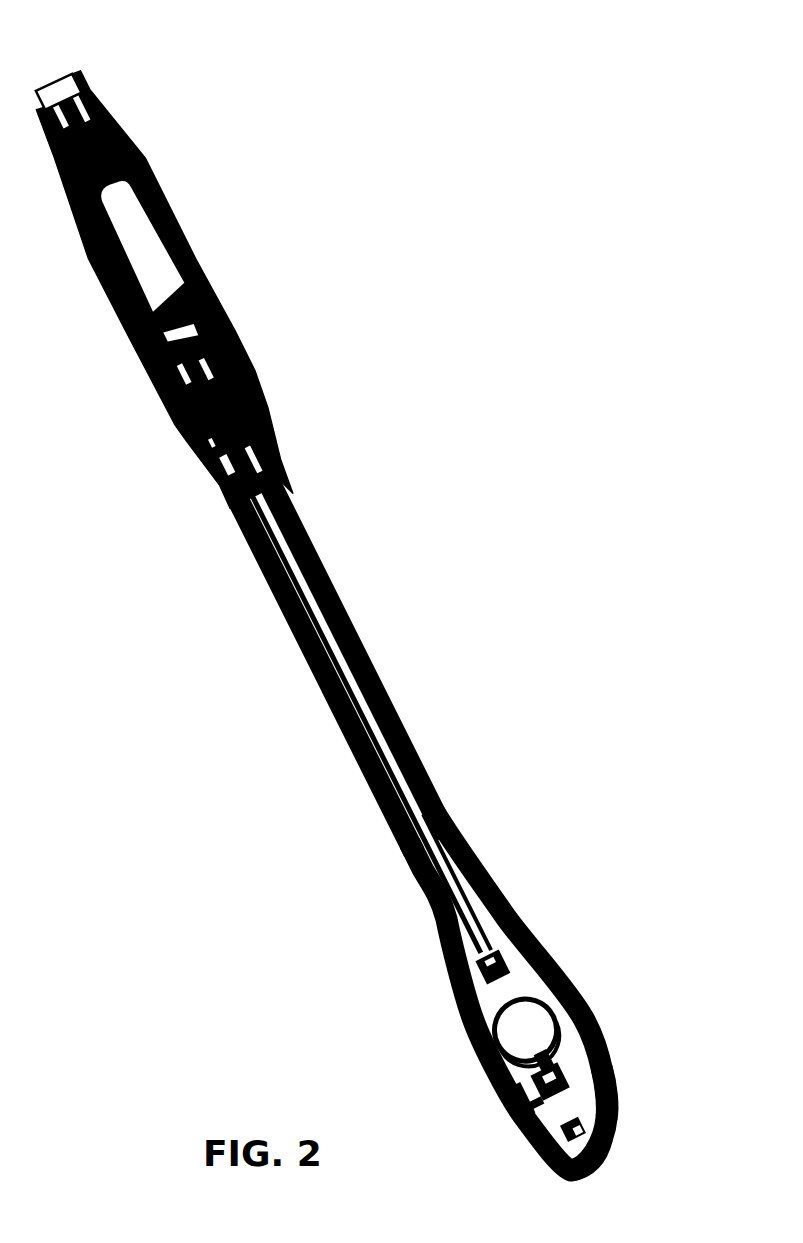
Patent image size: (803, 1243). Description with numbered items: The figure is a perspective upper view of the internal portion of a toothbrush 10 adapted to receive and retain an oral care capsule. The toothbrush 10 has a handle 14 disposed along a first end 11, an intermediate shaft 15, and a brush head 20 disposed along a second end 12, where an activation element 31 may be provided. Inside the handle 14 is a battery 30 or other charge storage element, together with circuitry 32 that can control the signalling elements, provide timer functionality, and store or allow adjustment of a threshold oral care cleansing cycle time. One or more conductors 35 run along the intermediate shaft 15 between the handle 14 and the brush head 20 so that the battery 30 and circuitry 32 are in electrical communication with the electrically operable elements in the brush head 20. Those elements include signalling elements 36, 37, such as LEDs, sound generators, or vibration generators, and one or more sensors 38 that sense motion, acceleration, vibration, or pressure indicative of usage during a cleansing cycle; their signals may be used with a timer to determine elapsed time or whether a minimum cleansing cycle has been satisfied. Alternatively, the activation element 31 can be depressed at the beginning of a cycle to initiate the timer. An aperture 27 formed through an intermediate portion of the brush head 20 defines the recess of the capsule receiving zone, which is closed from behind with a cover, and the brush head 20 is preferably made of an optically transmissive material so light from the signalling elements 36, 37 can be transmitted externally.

The toothbrush 10 is at (452, 386).
The first end 11 is at (52, 76).
The second end 12 is at (600, 1120).
The handle 14 is at (114, 122).
The intermediate shaft 15 is at (342, 628).
The brush head 20 is at (475, 1060).
The aperture 27 is at (518, 1022).
The battery 30 is at (133, 230).
The activation element 31 is at (583, 1156).
The circuitry 32 is at (183, 321).
The conductors 35 is at (357, 703).
The signalling element 36 is at (488, 950).
The signalling element 37 is at (543, 1060).
The sensor 38 is at (547, 1103).